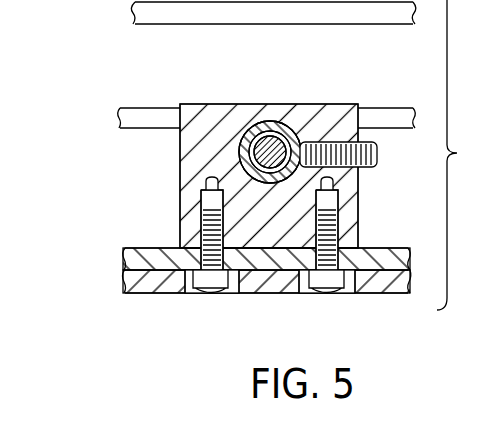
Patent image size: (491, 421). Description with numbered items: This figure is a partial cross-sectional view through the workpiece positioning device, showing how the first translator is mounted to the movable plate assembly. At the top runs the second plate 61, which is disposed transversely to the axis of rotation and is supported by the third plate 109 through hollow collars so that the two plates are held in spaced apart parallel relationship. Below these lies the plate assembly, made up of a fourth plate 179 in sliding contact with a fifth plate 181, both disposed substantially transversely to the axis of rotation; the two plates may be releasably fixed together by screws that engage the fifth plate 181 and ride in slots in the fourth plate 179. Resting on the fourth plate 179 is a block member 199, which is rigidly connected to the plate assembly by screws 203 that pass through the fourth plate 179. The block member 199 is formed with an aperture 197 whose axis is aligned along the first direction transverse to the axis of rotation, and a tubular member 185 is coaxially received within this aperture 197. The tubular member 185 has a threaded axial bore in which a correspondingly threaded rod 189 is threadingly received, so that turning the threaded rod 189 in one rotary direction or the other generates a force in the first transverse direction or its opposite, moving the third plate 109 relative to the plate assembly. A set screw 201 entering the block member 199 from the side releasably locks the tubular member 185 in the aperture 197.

The second plate 61 is at (133, 13).
The third plate 109 is at (119, 124).
The block member 199 is at (180, 162).
The fourth plate 179 is at (124, 257).
The fifth plate 181 is at (124, 282).
The threaded rod 189 is at (248, 124).
The aperture 197 is at (258, 132).
The tubular member 185 is at (284, 131).
The set screw 201 is at (378, 156).
The screws 203 is at (322, 294).